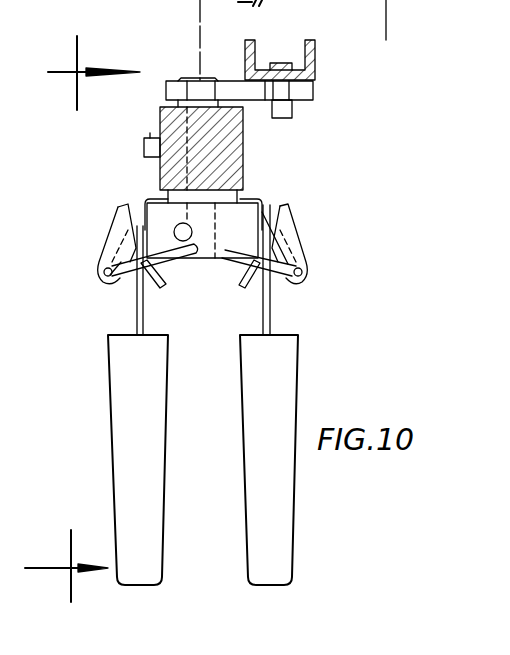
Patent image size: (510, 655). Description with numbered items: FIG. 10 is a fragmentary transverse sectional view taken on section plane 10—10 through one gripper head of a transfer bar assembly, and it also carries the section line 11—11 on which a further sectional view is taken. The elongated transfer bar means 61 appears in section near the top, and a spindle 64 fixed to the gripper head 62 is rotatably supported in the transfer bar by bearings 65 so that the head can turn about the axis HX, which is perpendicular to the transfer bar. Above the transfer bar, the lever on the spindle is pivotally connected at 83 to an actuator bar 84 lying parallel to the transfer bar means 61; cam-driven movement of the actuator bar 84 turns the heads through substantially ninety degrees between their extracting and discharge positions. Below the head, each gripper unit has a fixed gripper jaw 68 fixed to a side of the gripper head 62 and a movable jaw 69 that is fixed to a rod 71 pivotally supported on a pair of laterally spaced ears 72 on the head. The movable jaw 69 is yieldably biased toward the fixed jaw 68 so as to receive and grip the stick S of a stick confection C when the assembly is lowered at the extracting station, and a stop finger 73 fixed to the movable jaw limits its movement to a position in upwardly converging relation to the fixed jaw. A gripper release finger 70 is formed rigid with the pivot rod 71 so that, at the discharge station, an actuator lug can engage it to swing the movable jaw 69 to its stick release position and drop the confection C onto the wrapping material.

The section plane 10— 10 is at (407, 20).
The section line 11— 11 is at (82, 319).
The turning axis HX is at (198, 33).
The actuator bar 84 is at (316, 60).
The ears 72 is at (313, 92).
The pivotal connection 83 is at (292, 112).
The transfer bar means 61 is at (244, 162).
The bearings 65 is at (160, 112).
The spindle 64 is at (144, 150).
The gripper head 62 is at (248, 212).
The stop finger 73 is at (289, 210).
The fixed gripper jaw 68 is at (260, 236).
The movable jaw 69 is at (292, 250).
The gripper release finger 70 is at (243, 266).
The rod 71 is at (300, 274).
The stick S is at (272, 325).
The stick confection C is at (291, 385).